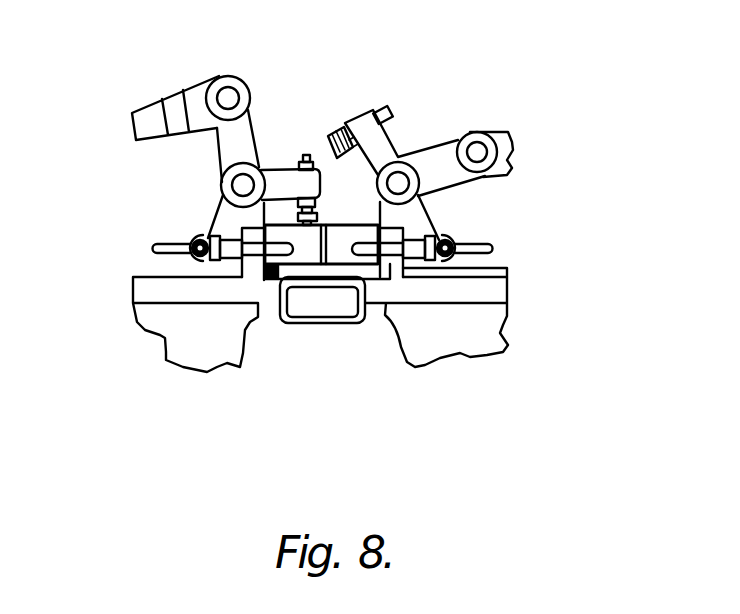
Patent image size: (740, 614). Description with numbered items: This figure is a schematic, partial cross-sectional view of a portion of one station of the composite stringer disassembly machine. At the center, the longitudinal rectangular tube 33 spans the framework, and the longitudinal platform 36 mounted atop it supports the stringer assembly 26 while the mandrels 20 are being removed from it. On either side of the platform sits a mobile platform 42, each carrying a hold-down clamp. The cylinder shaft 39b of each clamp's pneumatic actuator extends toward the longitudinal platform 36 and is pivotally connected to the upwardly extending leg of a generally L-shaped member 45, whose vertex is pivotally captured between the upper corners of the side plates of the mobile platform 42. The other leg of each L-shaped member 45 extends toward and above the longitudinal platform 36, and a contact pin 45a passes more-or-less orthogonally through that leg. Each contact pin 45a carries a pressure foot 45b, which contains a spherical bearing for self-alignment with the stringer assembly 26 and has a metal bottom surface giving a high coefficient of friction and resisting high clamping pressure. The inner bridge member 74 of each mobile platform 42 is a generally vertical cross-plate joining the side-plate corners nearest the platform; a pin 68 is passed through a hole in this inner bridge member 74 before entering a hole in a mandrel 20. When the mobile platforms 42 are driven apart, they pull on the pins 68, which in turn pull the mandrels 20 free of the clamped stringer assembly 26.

The mandrel 20 is at (306, 264).
The stringer assembly 26 is at (266, 279).
The longitudinal rectangular tube 33 is at (357, 272).
The longitudinal platform 36 is at (380, 273).
The cylinder shaft 39b is at (161, 103).
The mobile platform 42 is at (163, 337).
The L-shaped member 45 is at (254, 132).
The contact pin 45a is at (306, 155).
The pressure foot 45b is at (332, 130).
The pin 68 is at (195, 240).
The inner bridge member 74 is at (238, 228).